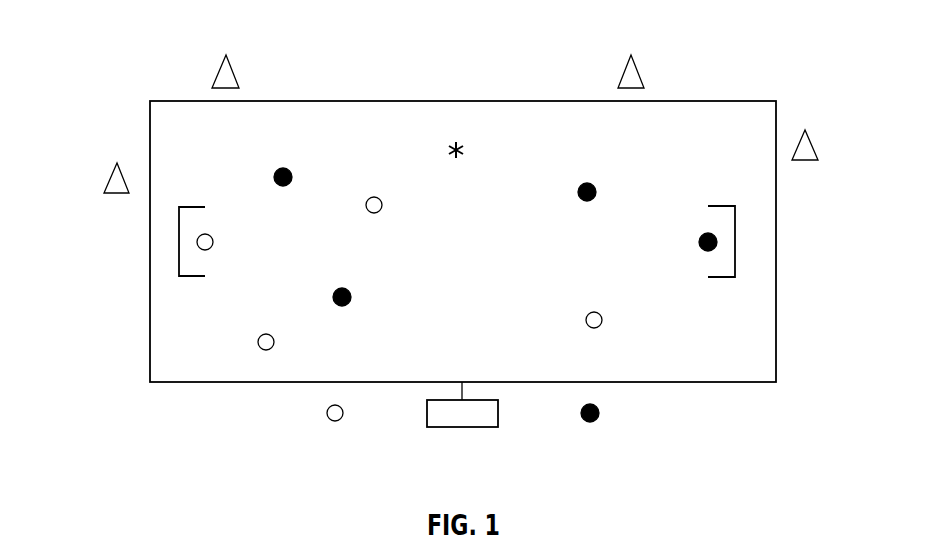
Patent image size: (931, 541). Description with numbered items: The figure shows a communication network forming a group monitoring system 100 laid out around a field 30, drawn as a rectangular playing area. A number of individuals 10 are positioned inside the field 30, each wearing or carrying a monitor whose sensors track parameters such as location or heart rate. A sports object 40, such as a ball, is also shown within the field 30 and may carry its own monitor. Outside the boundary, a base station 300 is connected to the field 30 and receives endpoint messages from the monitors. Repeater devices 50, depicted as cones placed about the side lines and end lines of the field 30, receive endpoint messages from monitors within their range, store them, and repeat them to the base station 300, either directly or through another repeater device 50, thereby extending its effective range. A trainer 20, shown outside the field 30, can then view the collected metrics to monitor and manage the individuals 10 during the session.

The group monitoring system 100 is at (739, 44).
The individual 10 is at (369, 197).
The trainer 20 is at (327, 415).
The field 30 is at (767, 339).
The sports object 40 is at (456, 140).
The repeater device 50 is at (216, 73).
The base station 300 is at (462, 427).